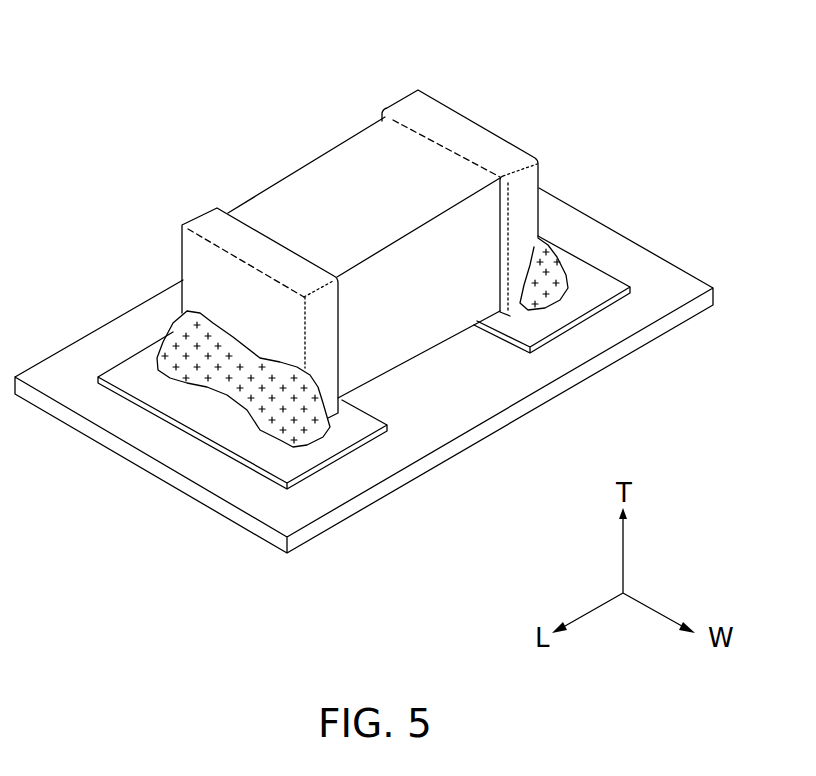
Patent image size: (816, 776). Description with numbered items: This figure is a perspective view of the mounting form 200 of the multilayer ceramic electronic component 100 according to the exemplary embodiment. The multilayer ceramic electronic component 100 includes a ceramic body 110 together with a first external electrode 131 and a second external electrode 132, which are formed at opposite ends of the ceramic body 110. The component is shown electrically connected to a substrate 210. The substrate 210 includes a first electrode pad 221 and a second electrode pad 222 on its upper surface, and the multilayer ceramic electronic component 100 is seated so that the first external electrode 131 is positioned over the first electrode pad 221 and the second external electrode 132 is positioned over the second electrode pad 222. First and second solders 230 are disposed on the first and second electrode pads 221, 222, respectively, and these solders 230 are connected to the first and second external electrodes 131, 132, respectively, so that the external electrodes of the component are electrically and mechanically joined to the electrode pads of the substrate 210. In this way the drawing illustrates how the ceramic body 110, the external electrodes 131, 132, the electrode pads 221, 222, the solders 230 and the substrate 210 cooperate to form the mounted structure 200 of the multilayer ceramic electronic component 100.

The mounting board structure 200 is at (139, 62).
The multilayer ceramic electronic component 100 is at (332, 128).
The ceramic body 110 is at (317, 183).
The first external electrode 131 is at (212, 230).
The second external electrode 132 is at (410, 117).
The substrate 210 is at (473, 388).
The first electrode pad 221 is at (335, 438).
The second electrode pad 222 is at (577, 298).
The solder 230 is at (227, 377).